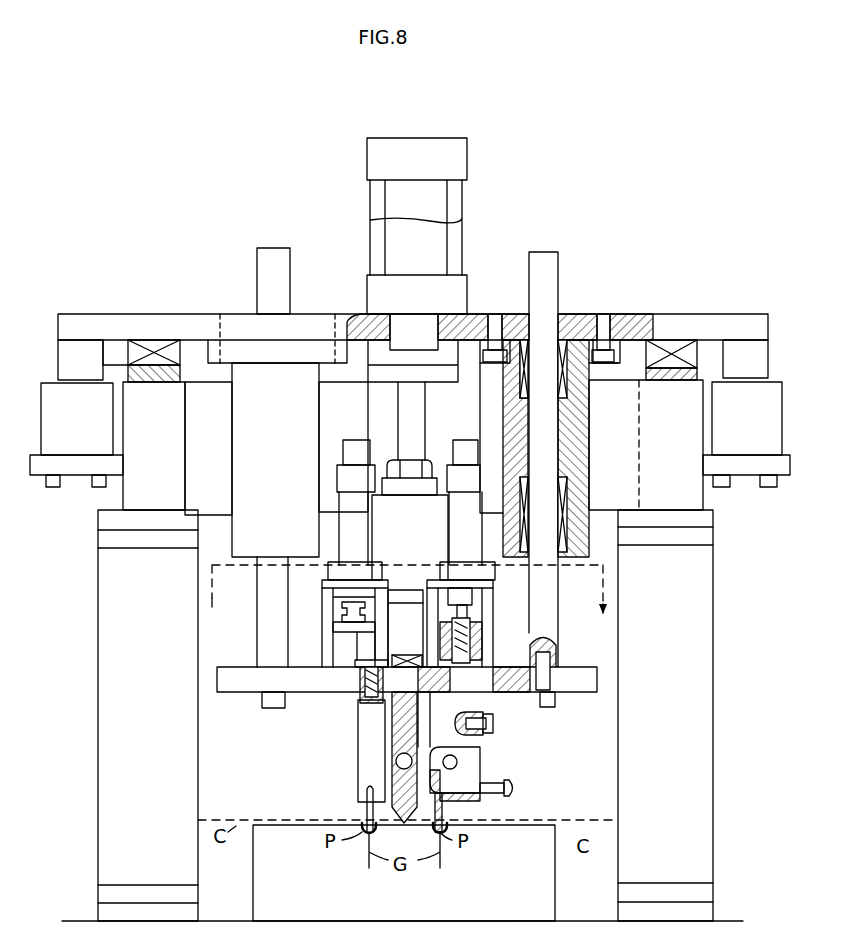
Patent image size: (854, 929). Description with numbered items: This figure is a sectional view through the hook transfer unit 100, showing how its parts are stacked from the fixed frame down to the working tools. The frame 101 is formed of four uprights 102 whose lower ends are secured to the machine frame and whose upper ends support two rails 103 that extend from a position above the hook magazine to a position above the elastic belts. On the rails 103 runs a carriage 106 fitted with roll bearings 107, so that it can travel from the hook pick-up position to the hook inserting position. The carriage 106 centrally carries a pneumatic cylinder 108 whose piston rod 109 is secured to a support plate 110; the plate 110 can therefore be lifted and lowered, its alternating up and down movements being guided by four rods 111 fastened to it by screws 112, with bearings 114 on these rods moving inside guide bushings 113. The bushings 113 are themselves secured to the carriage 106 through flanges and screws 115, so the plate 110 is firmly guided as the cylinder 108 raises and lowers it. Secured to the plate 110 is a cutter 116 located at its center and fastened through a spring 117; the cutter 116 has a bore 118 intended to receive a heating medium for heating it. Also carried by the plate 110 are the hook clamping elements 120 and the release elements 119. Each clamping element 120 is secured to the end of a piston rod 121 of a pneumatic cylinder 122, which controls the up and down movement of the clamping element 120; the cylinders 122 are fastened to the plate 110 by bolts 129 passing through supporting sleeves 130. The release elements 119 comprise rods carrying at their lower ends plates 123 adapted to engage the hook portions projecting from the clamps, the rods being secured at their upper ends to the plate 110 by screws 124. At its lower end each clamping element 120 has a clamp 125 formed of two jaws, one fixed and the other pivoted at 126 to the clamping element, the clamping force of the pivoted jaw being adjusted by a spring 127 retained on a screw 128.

The unit 100 is at (629, 293).
The frame 101 is at (130, 470).
The uprights 102 is at (98, 728).
The rails 103 is at (132, 374).
The carriage 106 is at (145, 313).
The roll bearings 107 is at (171, 352).
The pneumatic cylinder 108 is at (462, 157).
The piston rod 109 is at (418, 407).
The support plate 110 is at (226, 676).
The rods 111 is at (283, 262).
The screws 112 is at (272, 700).
The guide bushings 113 is at (232, 418).
The bearings 114 is at (512, 430).
The screws 115 is at (495, 332).
The cutter 116 is at (394, 752).
The spring 117 is at (392, 700).
The bore 118 is at (396, 762).
The release elements 119 is at (358, 788).
The hook clamping elements 120 is at (500, 742).
The piston rods 121 is at (350, 647).
The pneumatic cylinders 122 is at (448, 480).
The plates 123 is at (366, 808).
The screws 124 is at (378, 655).
The clamps 125 is at (443, 810).
The pivot 126 is at (480, 762).
The spring 127 is at (488, 796).
The screw 128 is at (514, 787).
The bolts 129 is at (335, 580).
The supporting sleeves 130 is at (322, 612).